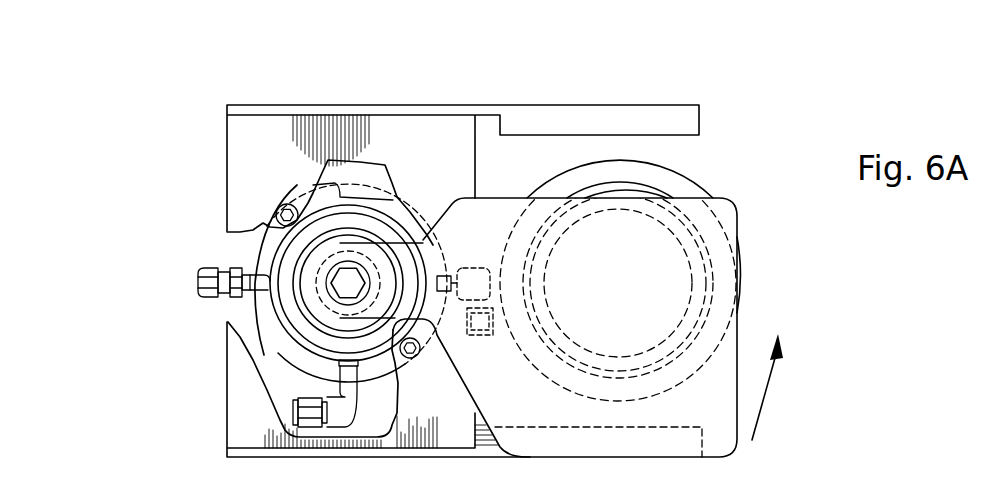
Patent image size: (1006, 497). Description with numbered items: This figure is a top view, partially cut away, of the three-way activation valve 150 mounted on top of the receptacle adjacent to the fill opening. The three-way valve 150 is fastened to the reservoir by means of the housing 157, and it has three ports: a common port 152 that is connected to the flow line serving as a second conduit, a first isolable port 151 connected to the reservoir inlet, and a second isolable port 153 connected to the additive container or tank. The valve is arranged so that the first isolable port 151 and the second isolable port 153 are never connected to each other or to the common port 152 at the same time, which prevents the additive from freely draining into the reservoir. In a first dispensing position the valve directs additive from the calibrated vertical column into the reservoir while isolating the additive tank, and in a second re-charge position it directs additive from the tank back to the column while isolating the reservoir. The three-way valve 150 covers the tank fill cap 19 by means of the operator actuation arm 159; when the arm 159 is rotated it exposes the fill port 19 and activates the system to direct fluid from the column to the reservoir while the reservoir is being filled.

The housing 157 is at (232, 86).
The tank fill cap 19 is at (673, 223).
The first isolable port 151 is at (438, 278).
The three-way activation valve 150 is at (270, 343).
The second isolable port 153 is at (250, 300).
The common port 152 is at (363, 392).
The operator actuation arm 159 is at (748, 340).